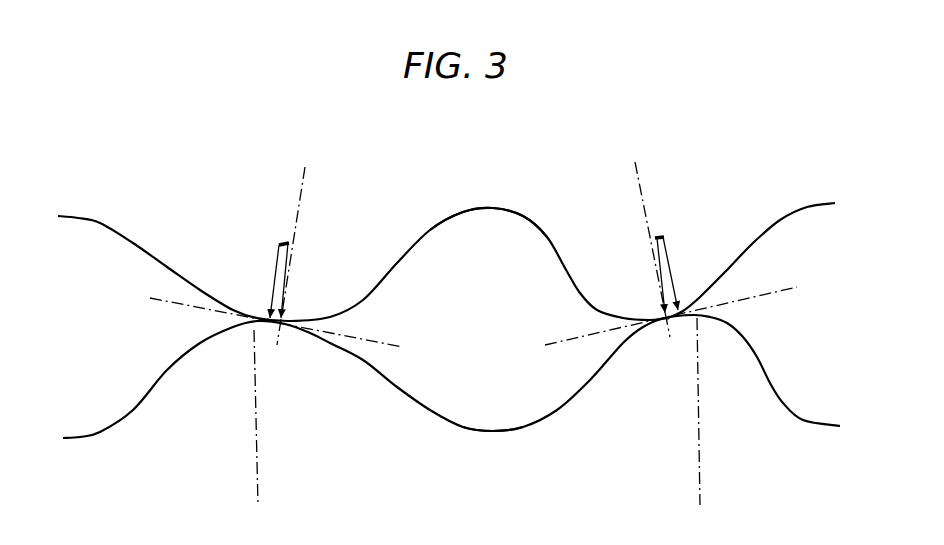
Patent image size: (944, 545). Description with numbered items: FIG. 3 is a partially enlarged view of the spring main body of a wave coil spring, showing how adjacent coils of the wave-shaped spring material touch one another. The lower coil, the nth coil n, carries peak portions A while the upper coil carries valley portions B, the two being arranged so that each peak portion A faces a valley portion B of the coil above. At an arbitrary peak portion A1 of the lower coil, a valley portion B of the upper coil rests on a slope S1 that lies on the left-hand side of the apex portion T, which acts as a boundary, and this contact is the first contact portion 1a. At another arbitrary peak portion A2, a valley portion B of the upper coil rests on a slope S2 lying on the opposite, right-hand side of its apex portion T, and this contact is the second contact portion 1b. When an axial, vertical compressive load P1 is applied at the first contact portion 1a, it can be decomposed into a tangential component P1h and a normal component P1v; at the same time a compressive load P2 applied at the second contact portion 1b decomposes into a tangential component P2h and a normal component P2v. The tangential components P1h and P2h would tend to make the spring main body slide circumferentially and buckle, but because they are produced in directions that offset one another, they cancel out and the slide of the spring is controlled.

The nth coil (lower coil) n is at (107, 432).
The peak portion A is at (505, 251).
The valley portion B is at (333, 236).
The apex portion T is at (253, 323).
The peak portion A2 is at (231, 448).
The peak portion A1 is at (738, 445).
The slope S2 is at (320, 330).
The slope S1 is at (633, 333).
The second contact portion 1b is at (283, 323).
The first contact portion 1a is at (668, 320).
The compressive load P2 is at (285, 280).
The normal component P2v is at (272, 280).
The tangential component P2h is at (287, 242).
The compressive load P1 is at (658, 270).
The normal component P1v is at (665, 268).
The tangential component P1h is at (662, 237).